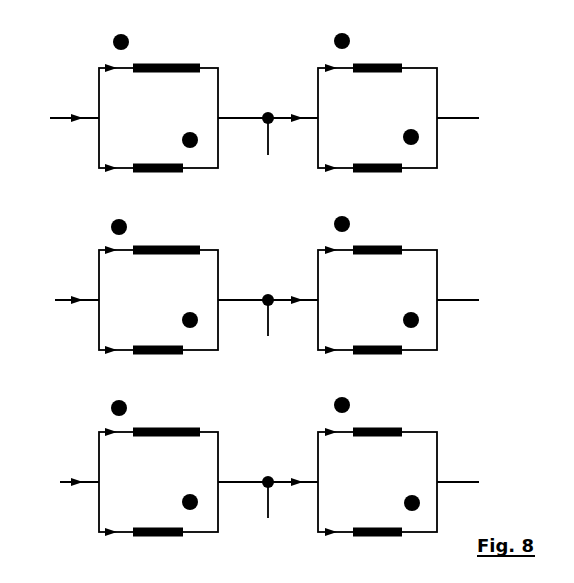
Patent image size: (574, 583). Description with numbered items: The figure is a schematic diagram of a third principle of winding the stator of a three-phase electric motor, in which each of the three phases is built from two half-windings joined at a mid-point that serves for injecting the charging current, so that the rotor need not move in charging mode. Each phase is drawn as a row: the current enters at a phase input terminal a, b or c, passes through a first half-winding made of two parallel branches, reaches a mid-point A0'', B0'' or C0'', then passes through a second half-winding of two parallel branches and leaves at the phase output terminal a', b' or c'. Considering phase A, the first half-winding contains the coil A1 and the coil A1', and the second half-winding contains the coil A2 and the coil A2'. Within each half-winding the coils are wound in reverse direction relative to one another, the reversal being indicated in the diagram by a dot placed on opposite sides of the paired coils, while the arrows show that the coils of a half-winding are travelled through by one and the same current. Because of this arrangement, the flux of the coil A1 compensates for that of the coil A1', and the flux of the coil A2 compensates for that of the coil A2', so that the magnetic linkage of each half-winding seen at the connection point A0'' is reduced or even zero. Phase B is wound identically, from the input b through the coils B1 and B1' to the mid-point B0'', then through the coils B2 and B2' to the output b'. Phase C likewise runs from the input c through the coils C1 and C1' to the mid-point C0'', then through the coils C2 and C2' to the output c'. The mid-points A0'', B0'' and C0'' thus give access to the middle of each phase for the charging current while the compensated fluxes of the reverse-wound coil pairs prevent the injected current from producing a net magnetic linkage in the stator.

The phase input terminal a is at (67, 117).
The phase output terminal a' is at (471, 117).
The coil A1 is at (156, 53).
The coil A1' is at (165, 152).
The coil A2 is at (368, 53).
The coil A2' is at (386, 151).
The mid-point A0'' is at (271, 147).
The phase input terminal b is at (67, 299).
The phase output terminal b' is at (471, 299).
The coil B1 is at (155, 237).
The coil B1' is at (165, 333).
The coil B2 is at (368, 235).
The coil B2' is at (386, 333).
The mid-point B0'' is at (272, 328).
The phase input terminal c is at (69, 481).
The phase output terminal c' is at (470, 481).
The coil C1 is at (155, 418).
The coil C1' is at (165, 515).
The coil C2 is at (368, 417).
The coil C2' is at (386, 516).
The mid-point C0'' is at (272, 510).